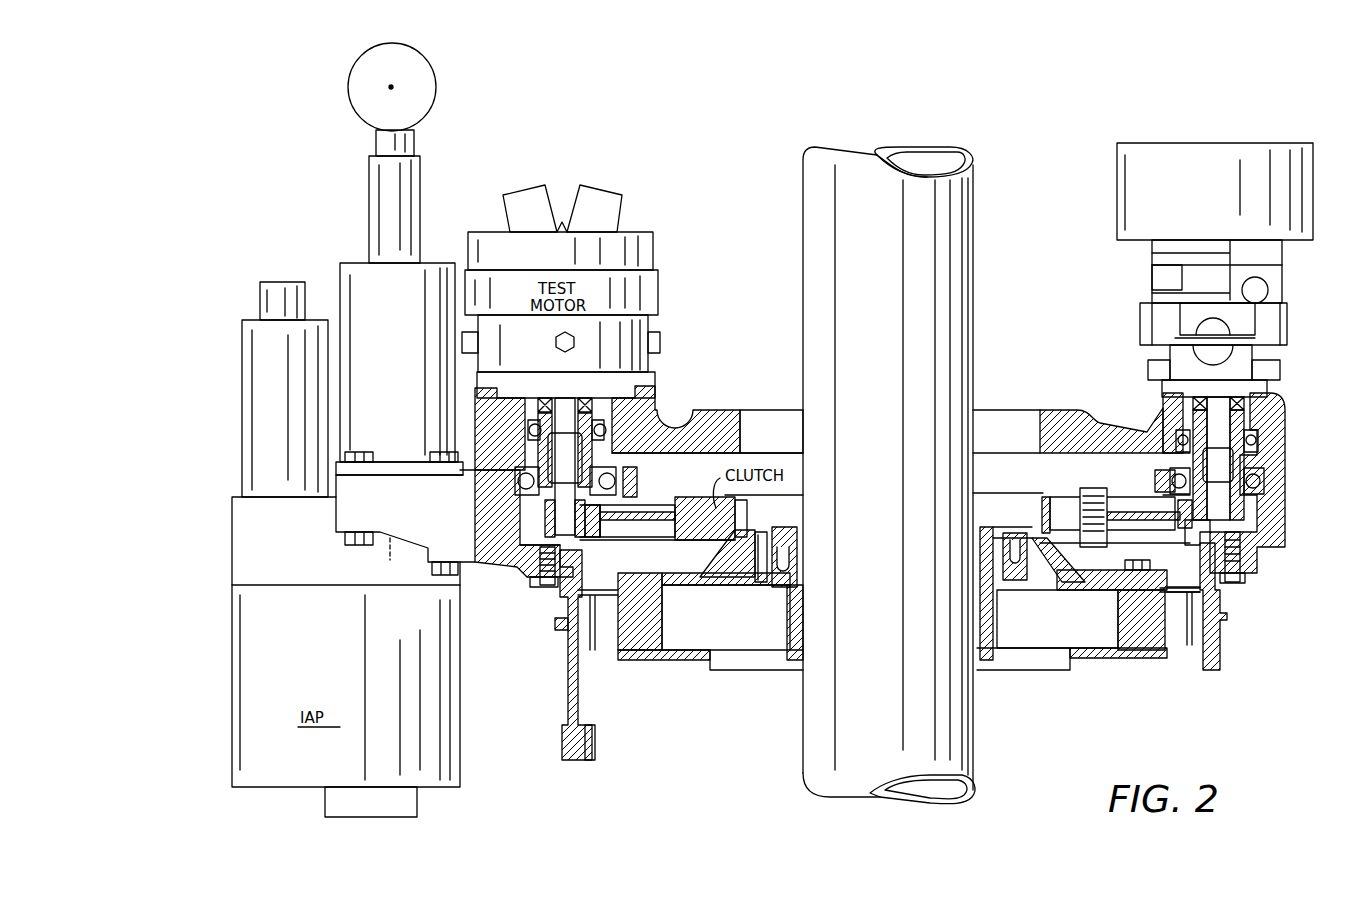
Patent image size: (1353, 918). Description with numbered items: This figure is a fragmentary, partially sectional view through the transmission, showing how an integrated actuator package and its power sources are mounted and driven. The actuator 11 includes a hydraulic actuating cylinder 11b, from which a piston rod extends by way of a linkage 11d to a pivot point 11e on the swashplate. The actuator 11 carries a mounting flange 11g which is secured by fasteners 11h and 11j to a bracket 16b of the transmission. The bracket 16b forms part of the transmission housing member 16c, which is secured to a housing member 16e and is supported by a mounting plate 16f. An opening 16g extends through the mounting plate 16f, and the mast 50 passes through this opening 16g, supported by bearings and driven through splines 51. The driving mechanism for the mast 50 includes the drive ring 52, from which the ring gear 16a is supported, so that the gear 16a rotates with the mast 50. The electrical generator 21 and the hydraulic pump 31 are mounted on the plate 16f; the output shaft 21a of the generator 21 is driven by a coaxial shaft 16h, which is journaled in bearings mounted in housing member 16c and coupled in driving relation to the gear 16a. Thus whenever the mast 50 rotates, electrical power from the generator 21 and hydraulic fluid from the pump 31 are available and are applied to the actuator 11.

The actuator 11 is at (338, 243).
The hydraulic actuating cylinder 11b is at (418, 328).
The linkage 11d is at (393, 188).
The pivot point 11e is at (389, 87).
The mounting flange 11g is at (396, 468).
The fastener 11h is at (360, 541).
The fastener 11j is at (446, 575).
The ring gear 16a is at (1197, 535).
The bracket 16b is at (438, 512).
The transmission housing member 16c is at (496, 560).
The housing member 16e is at (580, 722).
The mounting plate 16f is at (1065, 445).
The opening 16g is at (1030, 422).
The coaxial shaft 16h is at (1240, 495).
The electrical generator 21 is at (1265, 360).
The output shaft 21a is at (1225, 460).
The hydraulic pump 31 is at (1260, 268).
The mast 50 is at (925, 757).
The splines 51 is at (800, 603).
The drive ring 52 is at (1138, 615).